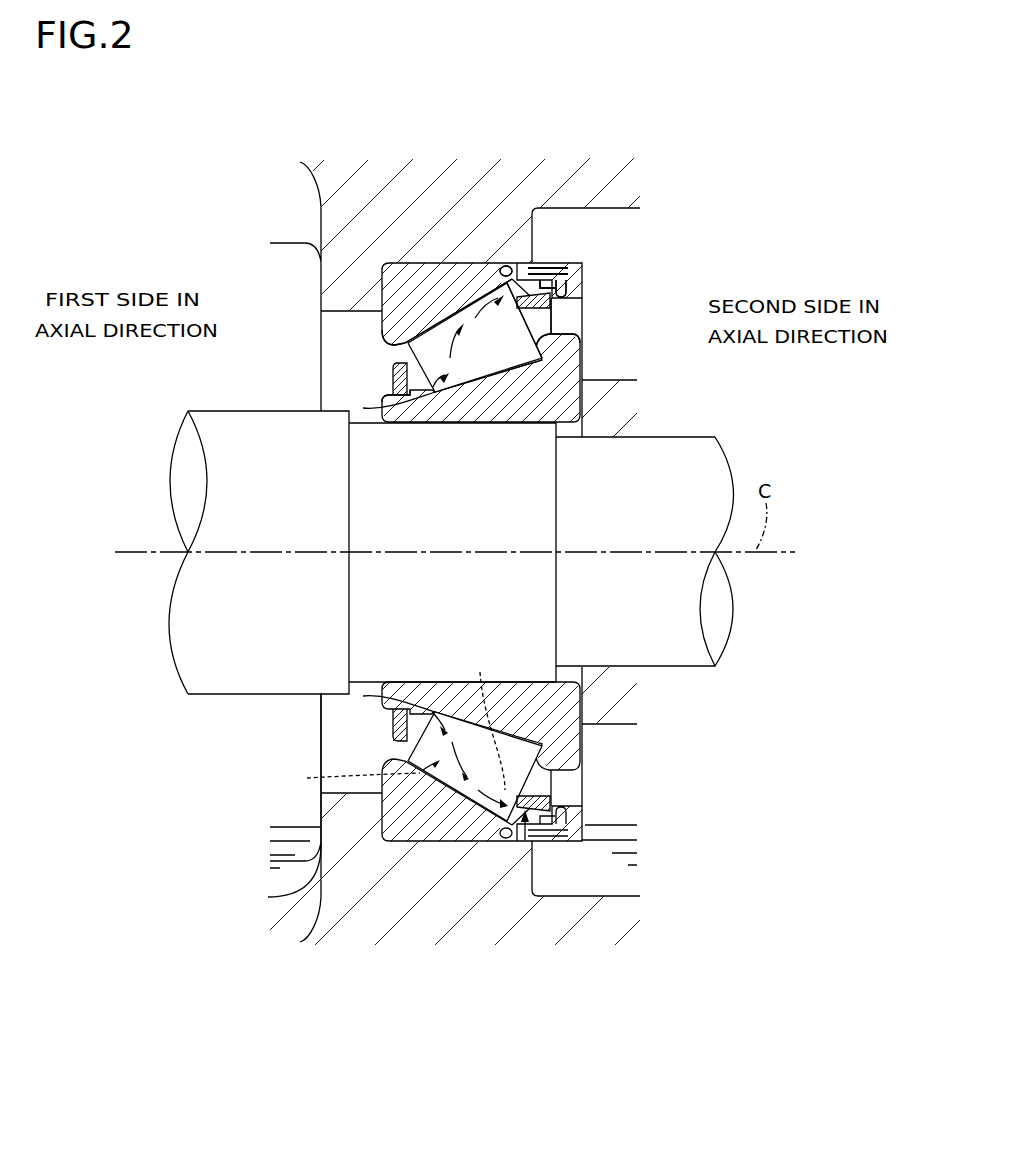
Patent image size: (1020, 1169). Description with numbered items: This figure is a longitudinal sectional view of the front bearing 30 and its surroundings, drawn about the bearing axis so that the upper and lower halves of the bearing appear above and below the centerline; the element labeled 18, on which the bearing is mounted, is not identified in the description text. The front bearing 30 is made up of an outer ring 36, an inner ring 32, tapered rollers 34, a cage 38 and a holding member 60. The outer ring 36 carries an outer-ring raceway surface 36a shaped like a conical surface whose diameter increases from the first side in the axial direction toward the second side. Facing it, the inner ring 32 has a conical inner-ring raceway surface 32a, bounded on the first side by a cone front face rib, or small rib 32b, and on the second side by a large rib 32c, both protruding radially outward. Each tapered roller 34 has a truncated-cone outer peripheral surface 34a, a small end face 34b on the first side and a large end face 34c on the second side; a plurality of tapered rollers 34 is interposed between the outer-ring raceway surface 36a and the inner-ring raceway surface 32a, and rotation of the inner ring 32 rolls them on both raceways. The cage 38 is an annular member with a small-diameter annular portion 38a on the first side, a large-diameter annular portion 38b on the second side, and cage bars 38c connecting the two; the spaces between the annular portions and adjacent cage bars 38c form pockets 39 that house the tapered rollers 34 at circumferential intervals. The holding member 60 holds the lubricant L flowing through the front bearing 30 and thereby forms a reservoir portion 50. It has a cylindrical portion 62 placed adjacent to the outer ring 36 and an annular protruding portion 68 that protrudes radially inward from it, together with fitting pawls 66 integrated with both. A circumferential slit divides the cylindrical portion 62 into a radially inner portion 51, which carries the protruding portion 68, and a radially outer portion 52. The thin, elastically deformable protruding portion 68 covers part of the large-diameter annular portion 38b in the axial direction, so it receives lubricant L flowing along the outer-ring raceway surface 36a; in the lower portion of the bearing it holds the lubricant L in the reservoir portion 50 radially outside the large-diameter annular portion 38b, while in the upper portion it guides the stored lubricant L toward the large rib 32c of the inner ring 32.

The shaft 18 is at (232, 408).
The front bearing 30 is at (388, 258).
The inner ring 32 is at (590, 393).
The inner-ring raceway surface 32a is at (488, 375).
The cone front face rib (small rib) 32b is at (430, 410).
The large rib 32c is at (566, 329).
The tapered roller 34 is at (442, 333).
The outer peripheral surface 34a is at (510, 398).
The small end face 34b is at (390, 379).
The large end face 34c is at (580, 361).
The outer ring 36 is at (452, 250).
The outer-ring raceway surface 36a is at (480, 337).
The cage 38 is at (385, 360).
The small-diameter annular portion 38a is at (397, 735).
The large-diameter annular portion 38b is at (550, 797).
The cage bar 38c is at (484, 719).
The pocket 39 is at (345, 785).
The reservoir portion 50 is at (523, 842).
The radially inner portion 51 is at (557, 273).
The radially outer portion 52 is at (550, 263).
The holding member 60 is at (543, 255).
The cylindrical portion 62 is at (672, 214).
The fitting pawl 66 is at (505, 258).
The protruding portion 68 is at (566, 289).
The lubricant L is at (290, 870).